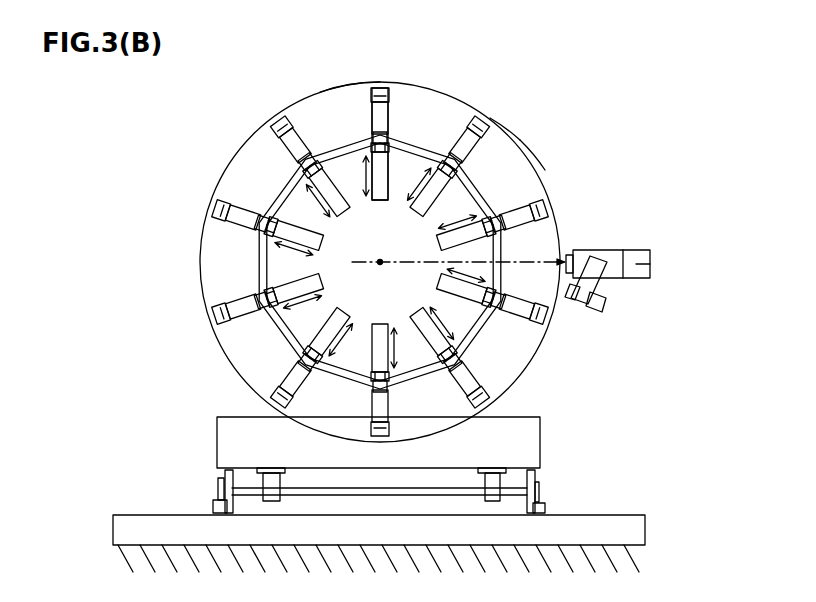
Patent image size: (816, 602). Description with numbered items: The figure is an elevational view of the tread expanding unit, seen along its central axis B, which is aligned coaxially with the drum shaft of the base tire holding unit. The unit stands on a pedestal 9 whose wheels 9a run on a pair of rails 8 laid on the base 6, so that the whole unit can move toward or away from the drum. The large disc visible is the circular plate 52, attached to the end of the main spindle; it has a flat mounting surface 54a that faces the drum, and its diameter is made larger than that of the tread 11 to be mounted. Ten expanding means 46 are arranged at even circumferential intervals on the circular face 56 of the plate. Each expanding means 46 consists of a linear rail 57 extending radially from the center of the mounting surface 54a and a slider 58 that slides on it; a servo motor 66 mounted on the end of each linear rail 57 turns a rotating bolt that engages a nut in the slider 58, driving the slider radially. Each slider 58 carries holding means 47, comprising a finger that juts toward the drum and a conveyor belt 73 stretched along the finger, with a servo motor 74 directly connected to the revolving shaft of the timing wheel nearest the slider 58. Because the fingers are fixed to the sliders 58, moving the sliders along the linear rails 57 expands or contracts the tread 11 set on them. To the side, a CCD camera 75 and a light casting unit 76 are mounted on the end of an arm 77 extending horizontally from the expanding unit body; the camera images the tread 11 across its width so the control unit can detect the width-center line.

The tread 11 is at (250, 142).
The circular face 56 is at (348, 100).
The mounting surface 54a is at (510, 128).
The circular plate 52 is at (532, 156).
The holding means 47 is at (340, 146).
The linear rail 57 is at (372, 110).
The servo motor 66 is at (386, 92).
The conveyor belt 73 is at (372, 138).
The slider 58 is at (318, 168).
The servo motor 74 is at (322, 196).
The expanding means 46 is at (392, 112).
The central axis B is at (382, 261).
The CCD camera 75 is at (604, 250).
The light casting unit 76 is at (591, 308).
The arm 77 is at (650, 264).
The pedestal 9 is at (545, 420).
The wheels 9a is at (537, 482).
The rails 8 is at (214, 502).
The base 6 is at (617, 528).